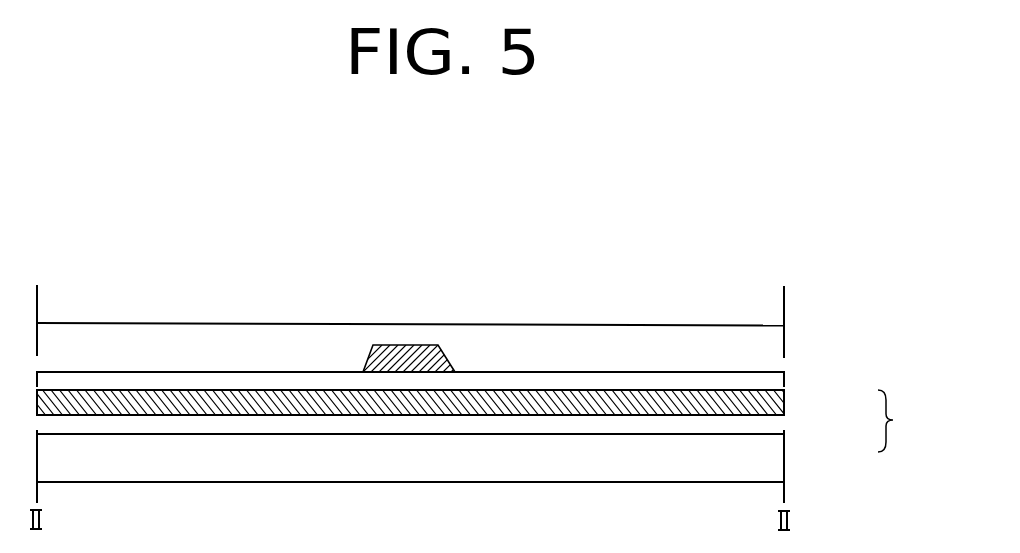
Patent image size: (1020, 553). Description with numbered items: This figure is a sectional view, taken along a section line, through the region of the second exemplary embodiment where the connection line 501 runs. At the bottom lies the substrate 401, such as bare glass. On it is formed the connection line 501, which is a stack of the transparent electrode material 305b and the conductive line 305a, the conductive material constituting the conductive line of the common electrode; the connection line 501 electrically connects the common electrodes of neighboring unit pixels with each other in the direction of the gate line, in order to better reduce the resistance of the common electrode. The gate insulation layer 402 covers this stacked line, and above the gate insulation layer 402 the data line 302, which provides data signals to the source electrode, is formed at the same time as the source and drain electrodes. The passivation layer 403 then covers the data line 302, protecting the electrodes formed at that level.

The data line 302 is at (406, 345).
The conductive line 305a is at (785, 409).
The transparent electrode material 305b is at (755, 431).
The substrate 401 is at (755, 467).
The gate insulation layer 402 is at (755, 380).
The passivation layer 403 is at (755, 338).
The connection line 501 is at (904, 421).